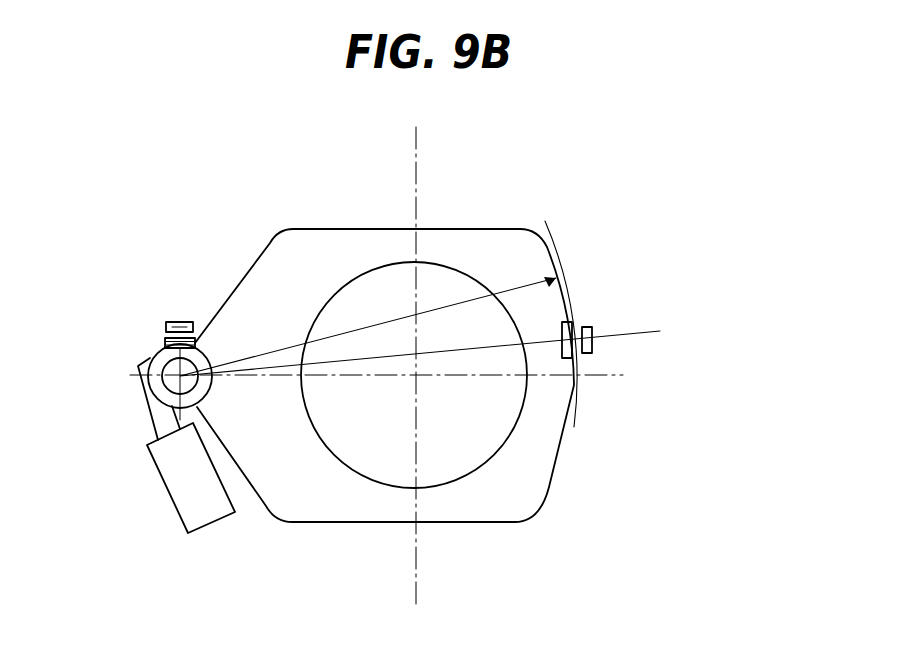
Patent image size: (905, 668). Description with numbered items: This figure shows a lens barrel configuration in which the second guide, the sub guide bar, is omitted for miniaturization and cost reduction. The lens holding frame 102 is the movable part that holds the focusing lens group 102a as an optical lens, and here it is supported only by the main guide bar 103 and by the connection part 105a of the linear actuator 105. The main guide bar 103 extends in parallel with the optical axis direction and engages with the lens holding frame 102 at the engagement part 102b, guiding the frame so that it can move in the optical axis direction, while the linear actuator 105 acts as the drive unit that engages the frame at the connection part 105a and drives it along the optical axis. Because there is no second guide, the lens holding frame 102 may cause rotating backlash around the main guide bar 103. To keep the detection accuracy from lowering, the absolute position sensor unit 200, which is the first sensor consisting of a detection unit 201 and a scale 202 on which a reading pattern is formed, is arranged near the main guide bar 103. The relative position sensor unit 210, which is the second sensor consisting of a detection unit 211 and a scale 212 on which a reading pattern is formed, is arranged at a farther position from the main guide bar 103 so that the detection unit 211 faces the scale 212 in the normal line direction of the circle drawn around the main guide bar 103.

The lens holding frame 102 is at (432, 235).
The focusing lens group 102a is at (455, 280).
The engagement part 102b is at (147, 380).
The main guide bar 103 is at (150, 360).
The linear actuator 105 is at (180, 480).
The connection part 105a is at (152, 413).
The absolute position sensor unit 200 is at (67, 250).
The detection unit 201 is at (178, 321).
The scale 202 is at (162, 343).
The relative position sensor unit 210 is at (713, 257).
The detection unit 211 is at (592, 330).
The scale 212 is at (572, 312).